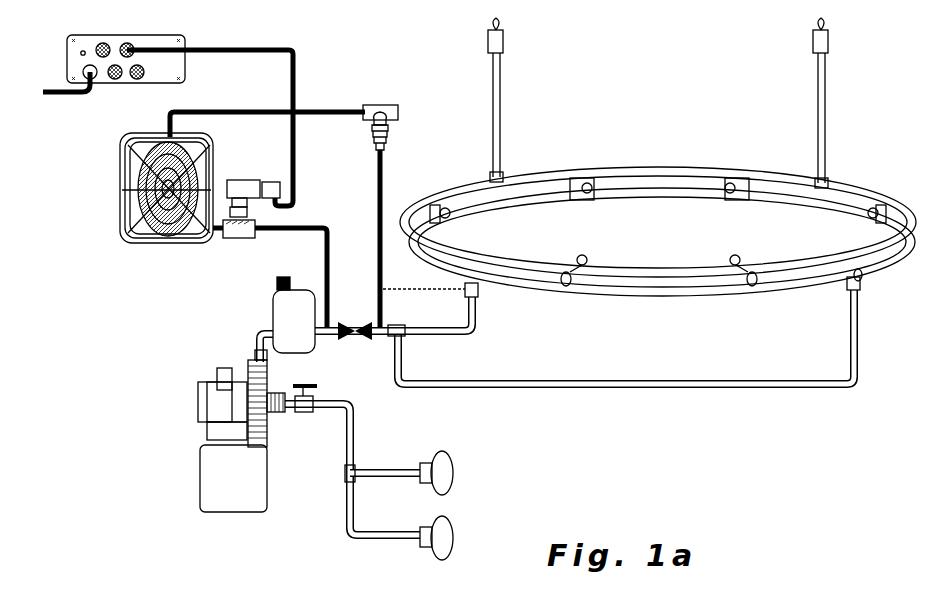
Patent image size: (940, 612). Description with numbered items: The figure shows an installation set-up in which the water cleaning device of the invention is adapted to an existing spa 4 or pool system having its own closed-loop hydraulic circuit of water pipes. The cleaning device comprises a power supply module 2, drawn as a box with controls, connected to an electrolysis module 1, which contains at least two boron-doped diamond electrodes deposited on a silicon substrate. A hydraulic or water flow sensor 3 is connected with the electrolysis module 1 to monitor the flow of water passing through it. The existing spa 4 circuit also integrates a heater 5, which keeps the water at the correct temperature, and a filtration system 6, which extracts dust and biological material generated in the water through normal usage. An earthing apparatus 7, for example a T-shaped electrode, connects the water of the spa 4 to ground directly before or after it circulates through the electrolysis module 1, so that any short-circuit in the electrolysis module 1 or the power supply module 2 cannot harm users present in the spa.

The electrolysis module 1 is at (122, 255).
The power supply module 2 is at (95, 110).
The water flow sensor 3 is at (248, 163).
The spa 4 is at (860, 120).
The heater 5 is at (262, 307).
The filtration system 6 is at (184, 436).
The earthing apparatus 7 is at (368, 90).